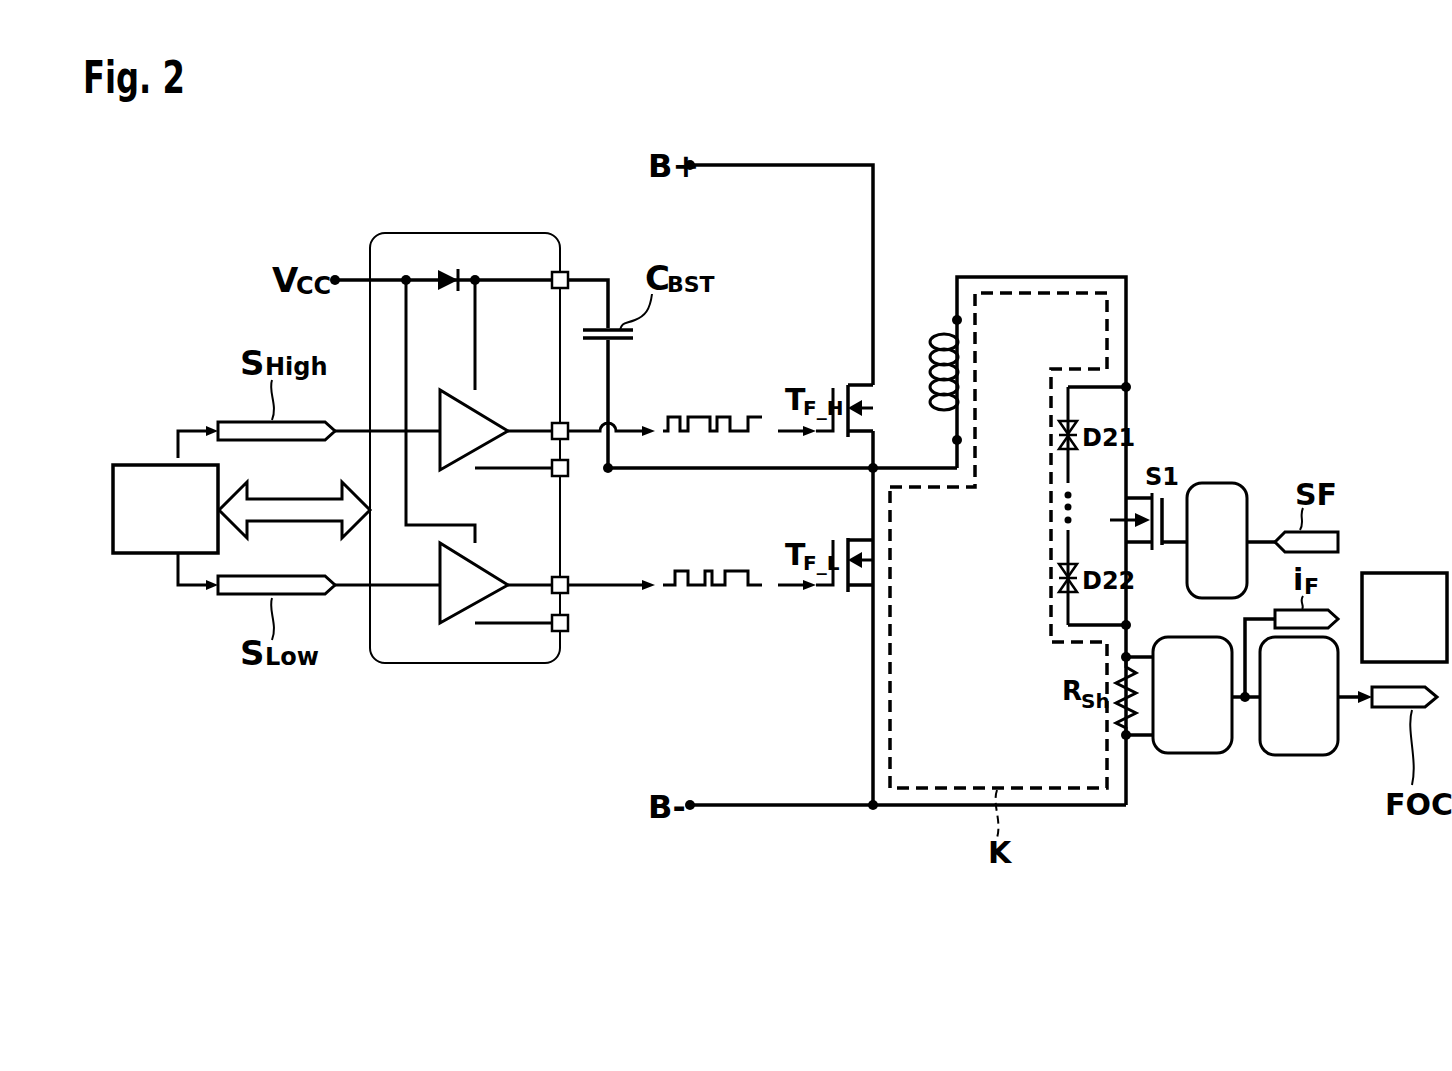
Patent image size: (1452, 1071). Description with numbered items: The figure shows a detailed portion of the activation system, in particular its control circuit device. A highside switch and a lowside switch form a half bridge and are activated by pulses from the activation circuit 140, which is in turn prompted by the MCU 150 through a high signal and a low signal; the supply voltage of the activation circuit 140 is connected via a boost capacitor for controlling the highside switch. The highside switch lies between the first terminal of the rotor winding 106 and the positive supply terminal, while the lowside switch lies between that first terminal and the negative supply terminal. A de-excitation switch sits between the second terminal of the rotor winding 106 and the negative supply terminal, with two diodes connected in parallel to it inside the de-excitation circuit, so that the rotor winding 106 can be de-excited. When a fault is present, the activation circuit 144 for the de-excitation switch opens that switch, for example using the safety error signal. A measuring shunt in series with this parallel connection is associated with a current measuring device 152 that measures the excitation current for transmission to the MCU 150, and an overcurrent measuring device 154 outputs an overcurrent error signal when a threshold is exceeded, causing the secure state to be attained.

The MCU 150 is at (140, 463).
The activation circuit 140 is at (463, 665).
The rotor winding 106 is at (964, 365).
The activation circuit for the de-excitation switch 144 is at (1208, 482).
The current measuring device 152 is at (1205, 755).
The overcurrent measuring device 154 is at (1305, 757).